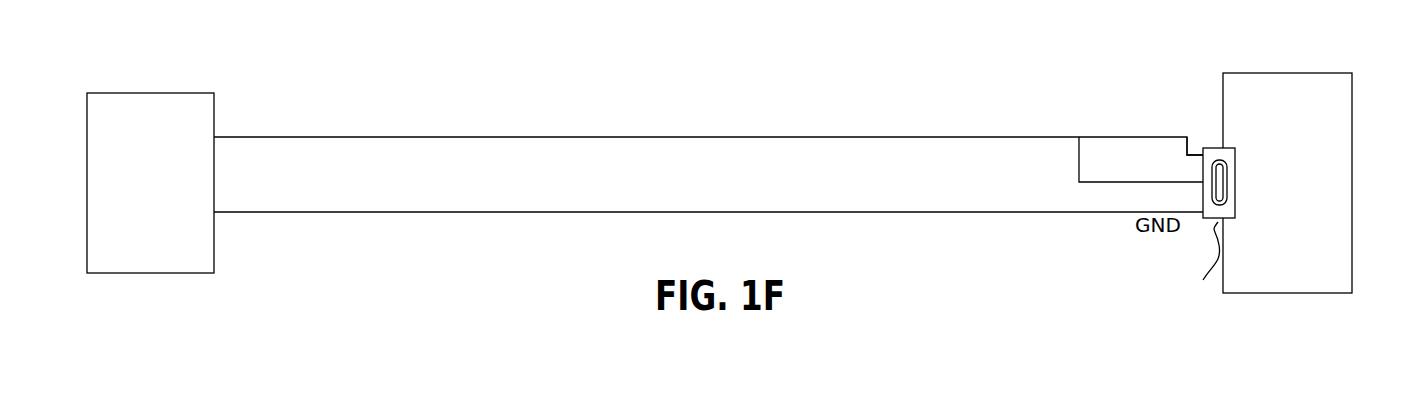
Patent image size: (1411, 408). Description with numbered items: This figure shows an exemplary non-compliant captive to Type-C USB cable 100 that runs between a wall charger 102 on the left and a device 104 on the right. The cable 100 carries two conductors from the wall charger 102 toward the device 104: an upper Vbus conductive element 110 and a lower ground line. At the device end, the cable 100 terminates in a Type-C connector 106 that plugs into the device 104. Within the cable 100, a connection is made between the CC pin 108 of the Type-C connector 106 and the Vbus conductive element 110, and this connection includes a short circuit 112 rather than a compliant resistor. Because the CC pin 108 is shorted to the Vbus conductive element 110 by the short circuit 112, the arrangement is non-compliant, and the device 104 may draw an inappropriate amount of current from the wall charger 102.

The non-compliant captive to Type-C USB cable 100 is at (1122, 75).
The wall charger 102 is at (214, 253).
The device 104 is at (1342, 285).
The Type-C connector 106 is at (1220, 220).
The CC pin 108 is at (1196, 160).
The Vbus conductive element 110 is at (1061, 136).
The short circuit 112 is at (1079, 170).